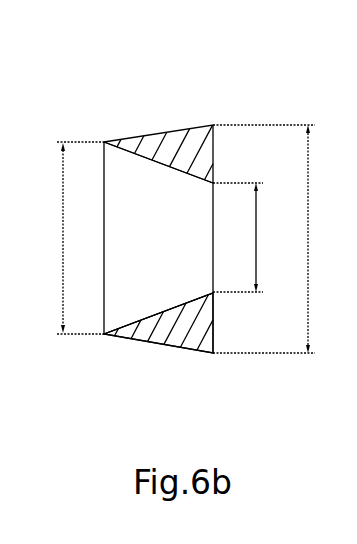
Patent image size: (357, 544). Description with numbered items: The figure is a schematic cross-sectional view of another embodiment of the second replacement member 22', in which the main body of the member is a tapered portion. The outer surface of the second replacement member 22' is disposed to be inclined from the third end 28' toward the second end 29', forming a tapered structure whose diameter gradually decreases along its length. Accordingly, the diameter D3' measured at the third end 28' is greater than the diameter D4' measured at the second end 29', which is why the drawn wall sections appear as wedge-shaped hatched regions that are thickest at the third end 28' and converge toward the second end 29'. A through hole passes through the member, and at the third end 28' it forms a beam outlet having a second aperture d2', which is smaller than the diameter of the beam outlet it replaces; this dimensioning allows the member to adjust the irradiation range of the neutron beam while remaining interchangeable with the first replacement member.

The second replacement member 22' is at (128, 189).
The third end 28' is at (168, 356).
The second end 29' is at (158, 280).
The diameter of the second end D4' is at (65, 238).
The diameter of the third end D3' is at (264, 239).
The second aperture d2' is at (238, 237).